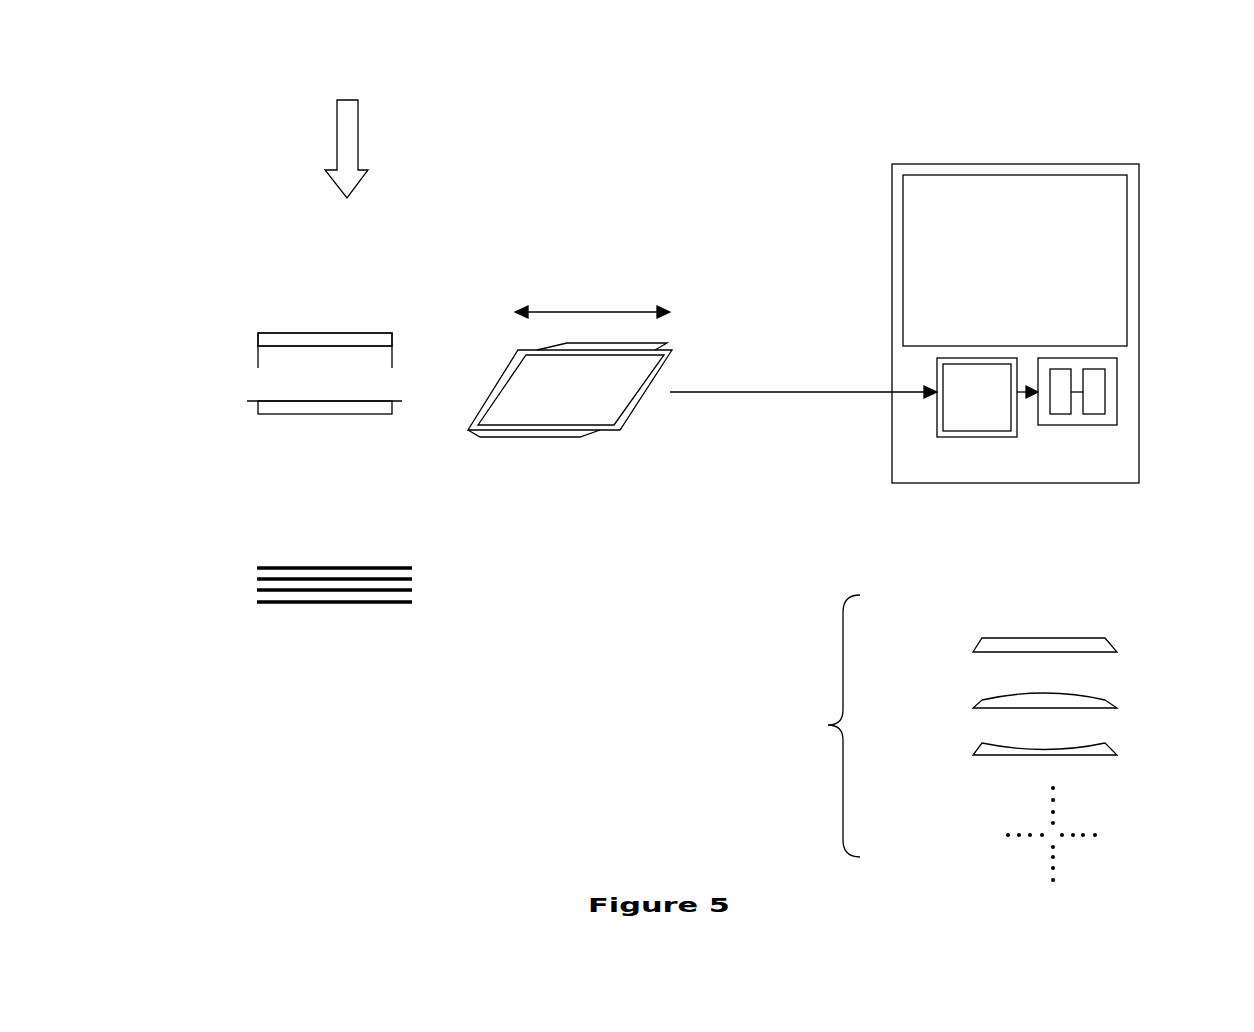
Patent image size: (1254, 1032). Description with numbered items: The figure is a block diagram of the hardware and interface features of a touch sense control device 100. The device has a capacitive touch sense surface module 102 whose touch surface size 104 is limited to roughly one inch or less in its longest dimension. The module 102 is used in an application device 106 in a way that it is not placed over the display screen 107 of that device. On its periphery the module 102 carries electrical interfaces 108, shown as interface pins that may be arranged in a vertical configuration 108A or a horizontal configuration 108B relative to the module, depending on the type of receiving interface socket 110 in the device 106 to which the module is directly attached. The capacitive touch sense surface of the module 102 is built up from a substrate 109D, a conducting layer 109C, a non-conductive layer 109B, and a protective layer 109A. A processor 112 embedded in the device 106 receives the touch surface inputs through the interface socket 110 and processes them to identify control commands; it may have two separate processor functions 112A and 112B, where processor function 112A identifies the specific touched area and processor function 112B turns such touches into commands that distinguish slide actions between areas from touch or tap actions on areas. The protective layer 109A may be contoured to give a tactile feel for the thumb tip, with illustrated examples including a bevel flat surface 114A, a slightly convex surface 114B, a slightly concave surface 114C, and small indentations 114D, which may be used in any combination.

The touch sense control device 100 is at (368, 136).
The capacitive touch sense surface module 102 is at (333, 333).
The touch surface size 104 is at (592, 297).
The application device 106 is at (948, 153).
The display screen 107 is at (927, 244).
The electrical interfaces 108 is at (513, 438).
The vertical configuration 108A is at (257, 358).
The horizontal configuration 108B is at (248, 402).
The protective layer 109A is at (412, 568).
The non-conductive layer 109B is at (412, 579).
The conducting layer 109C is at (412, 590).
The substrate 109D is at (412, 602).
The receiving interface socket 110 is at (982, 437).
The processor 112 is at (1050, 427).
The processor function 112A is at (1060, 415).
The processor function 112B is at (1095, 415).
The bevel flat surface 114A is at (973, 642).
The slightly convex surface 114B is at (973, 698).
The slightly concave surface 114C is at (985, 732).
The small indentations 114D is at (1007, 822).